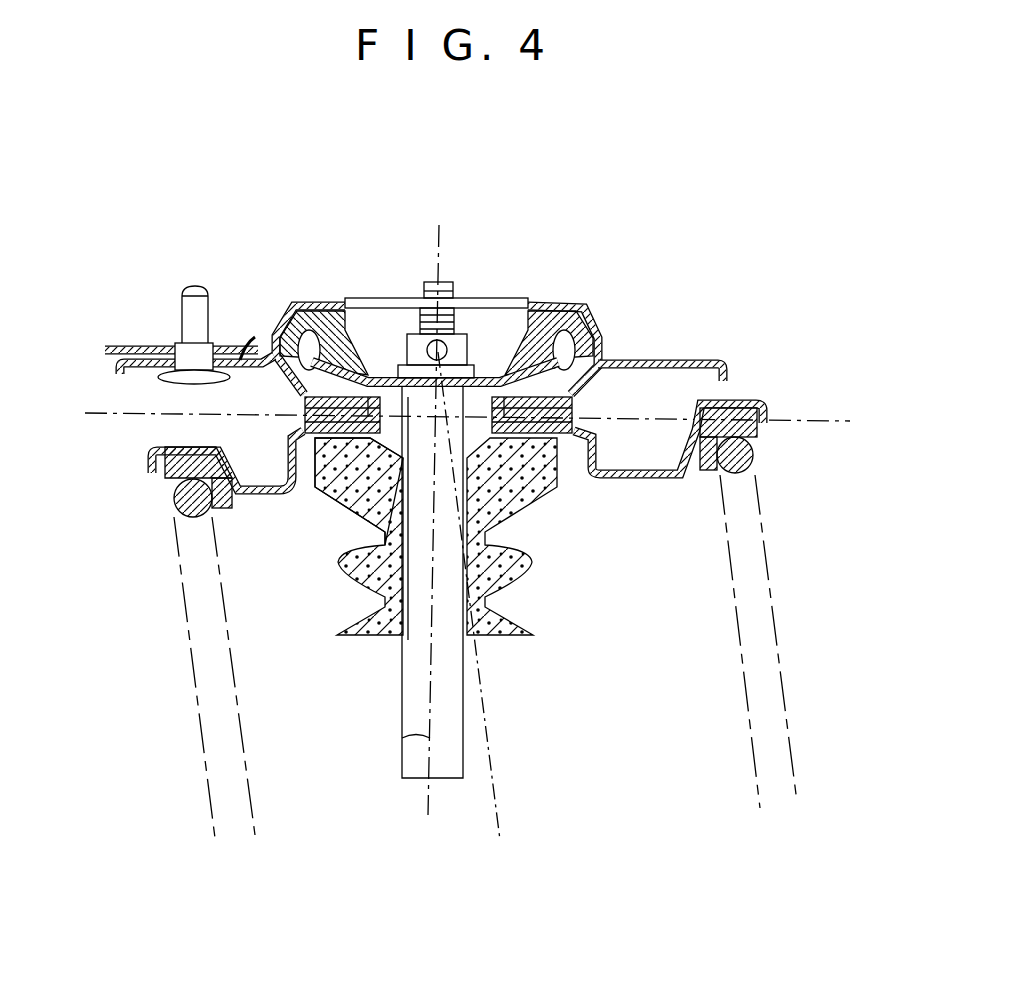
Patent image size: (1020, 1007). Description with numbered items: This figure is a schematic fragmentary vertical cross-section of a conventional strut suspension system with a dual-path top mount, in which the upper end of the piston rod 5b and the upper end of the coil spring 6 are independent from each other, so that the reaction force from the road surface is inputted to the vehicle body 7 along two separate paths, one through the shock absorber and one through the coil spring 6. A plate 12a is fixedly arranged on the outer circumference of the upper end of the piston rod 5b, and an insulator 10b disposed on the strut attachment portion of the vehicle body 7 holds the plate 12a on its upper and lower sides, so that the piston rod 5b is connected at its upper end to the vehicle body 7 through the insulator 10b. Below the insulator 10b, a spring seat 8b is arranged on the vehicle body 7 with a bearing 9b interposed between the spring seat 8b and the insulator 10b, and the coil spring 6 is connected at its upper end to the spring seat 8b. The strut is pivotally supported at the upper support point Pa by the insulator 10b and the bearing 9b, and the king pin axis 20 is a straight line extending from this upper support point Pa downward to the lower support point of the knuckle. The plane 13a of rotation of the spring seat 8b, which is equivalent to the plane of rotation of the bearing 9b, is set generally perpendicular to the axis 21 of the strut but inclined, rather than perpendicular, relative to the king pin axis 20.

The vehicle body 7 is at (137, 345).
The bearing 9b is at (310, 420).
The plate 12a is at (368, 371).
The upper support point Pa is at (446, 348).
The insulator 10b is at (593, 343).
The spring seat 8b is at (741, 397).
The plane of rotation 13a is at (828, 426).
The piston rod 5b is at (410, 670).
The axis of the strut 21 is at (398, 736).
The king pin axis 20 is at (492, 763).
The coil spring 6 is at (786, 700).